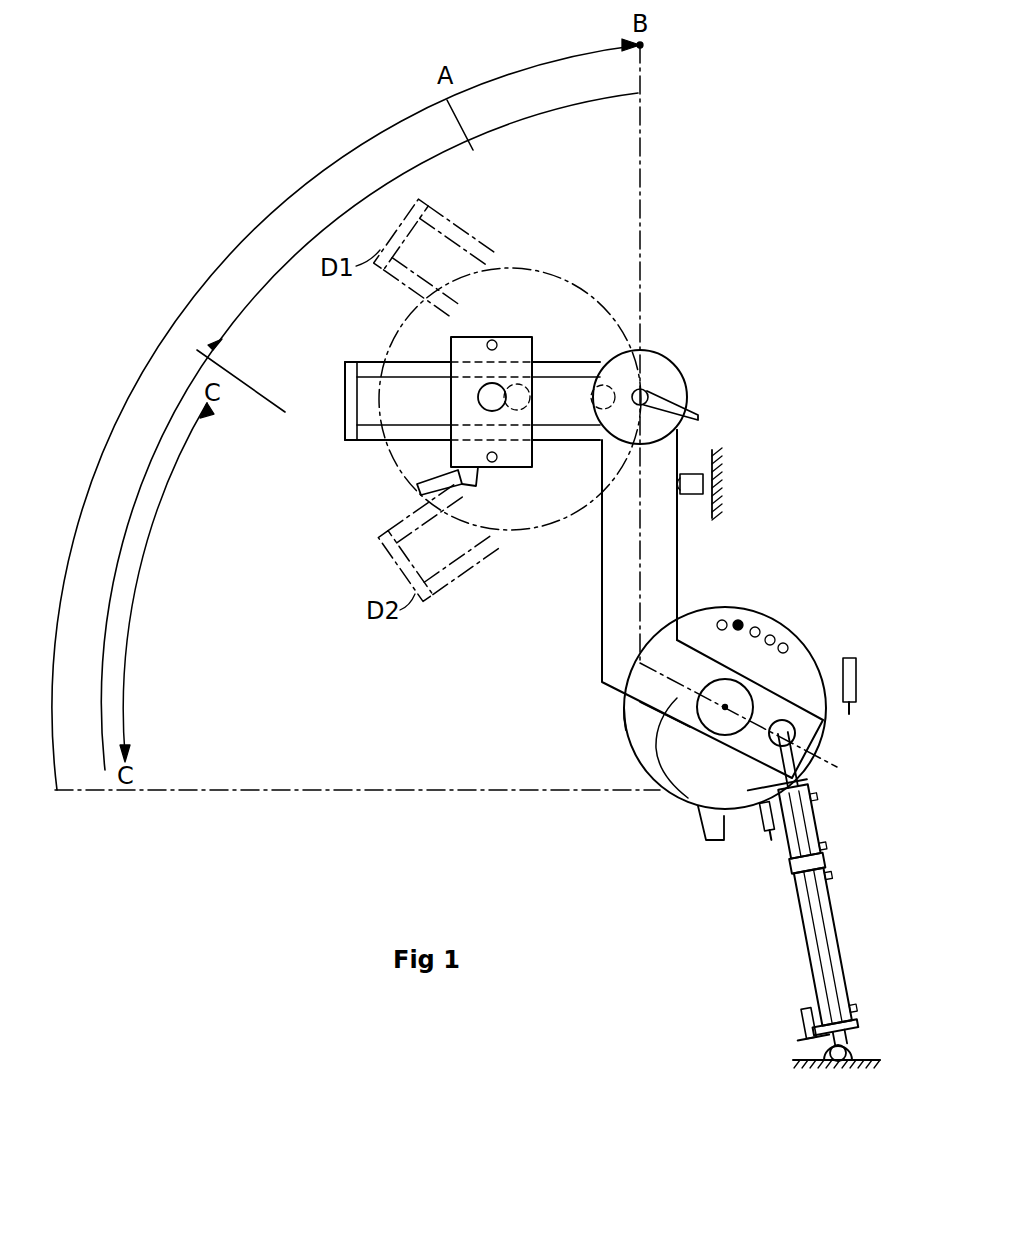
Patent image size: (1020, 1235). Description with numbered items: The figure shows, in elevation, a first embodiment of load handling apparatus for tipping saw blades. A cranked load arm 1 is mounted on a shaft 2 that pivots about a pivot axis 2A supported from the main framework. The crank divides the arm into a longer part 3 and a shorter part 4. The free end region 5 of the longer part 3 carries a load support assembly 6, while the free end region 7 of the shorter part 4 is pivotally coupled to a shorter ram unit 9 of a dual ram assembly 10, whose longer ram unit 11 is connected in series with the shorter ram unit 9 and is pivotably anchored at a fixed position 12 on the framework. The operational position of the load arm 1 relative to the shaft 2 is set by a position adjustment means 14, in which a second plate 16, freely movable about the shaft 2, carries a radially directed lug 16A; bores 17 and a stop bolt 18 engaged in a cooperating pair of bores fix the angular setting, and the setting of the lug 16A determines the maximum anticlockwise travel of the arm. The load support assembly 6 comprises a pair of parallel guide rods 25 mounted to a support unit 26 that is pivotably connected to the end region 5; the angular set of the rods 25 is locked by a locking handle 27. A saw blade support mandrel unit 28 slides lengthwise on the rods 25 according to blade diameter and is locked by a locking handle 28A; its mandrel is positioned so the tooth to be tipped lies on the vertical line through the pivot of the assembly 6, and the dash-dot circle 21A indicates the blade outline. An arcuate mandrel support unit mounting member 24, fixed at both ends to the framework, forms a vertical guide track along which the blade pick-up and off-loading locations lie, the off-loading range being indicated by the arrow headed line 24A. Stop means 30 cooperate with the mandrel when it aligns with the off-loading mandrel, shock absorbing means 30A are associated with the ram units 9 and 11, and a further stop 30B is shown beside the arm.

The load arm 1 is at (598, 568).
The shaft 2 is at (722, 720).
The pivot axis 2A is at (677, 733).
The longer part 3 is at (668, 535).
The shorter part 4 is at (677, 700).
The free end region 5 is at (688, 446).
The load support assembly 6 is at (568, 358).
The free end region 7 is at (792, 708).
The shorter ram unit 9 is at (822, 817).
The dual ram assembly 10 is at (848, 861).
The longer ram unit 11 is at (797, 963).
The fixed position 12 is at (847, 1052).
The position adjustment means 14 is at (630, 717).
The second plate 16 is at (762, 669).
The radially directed lug 16A is at (716, 842).
The bores 17 is at (770, 636).
The stop bolt 18 is at (740, 620).
The rotation circle 21A is at (572, 280).
The mandrel support unit mounting member 24 is at (72, 545).
The arrow headed line 24A is at (135, 608).
The guide rods 25 is at (388, 368).
The support unit 26 is at (655, 368).
The locking handle 27 is at (690, 385).
The saw blade support mandrel unit 28 is at (512, 340).
The locking handle 28A is at (420, 478).
The stop means 30 is at (856, 660).
The shock absorbing means 30A is at (752, 927).
The sensor wall 30B is at (722, 472).